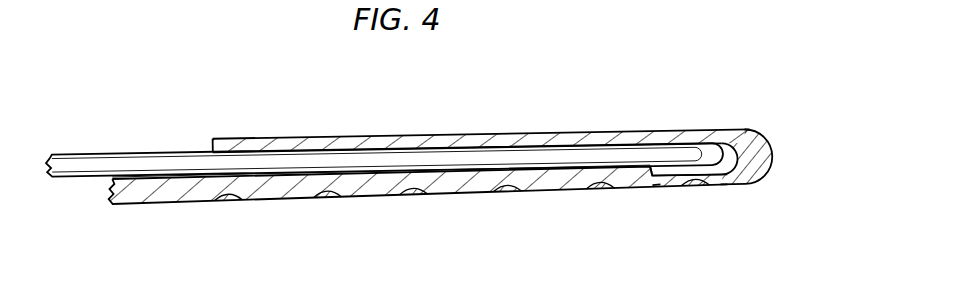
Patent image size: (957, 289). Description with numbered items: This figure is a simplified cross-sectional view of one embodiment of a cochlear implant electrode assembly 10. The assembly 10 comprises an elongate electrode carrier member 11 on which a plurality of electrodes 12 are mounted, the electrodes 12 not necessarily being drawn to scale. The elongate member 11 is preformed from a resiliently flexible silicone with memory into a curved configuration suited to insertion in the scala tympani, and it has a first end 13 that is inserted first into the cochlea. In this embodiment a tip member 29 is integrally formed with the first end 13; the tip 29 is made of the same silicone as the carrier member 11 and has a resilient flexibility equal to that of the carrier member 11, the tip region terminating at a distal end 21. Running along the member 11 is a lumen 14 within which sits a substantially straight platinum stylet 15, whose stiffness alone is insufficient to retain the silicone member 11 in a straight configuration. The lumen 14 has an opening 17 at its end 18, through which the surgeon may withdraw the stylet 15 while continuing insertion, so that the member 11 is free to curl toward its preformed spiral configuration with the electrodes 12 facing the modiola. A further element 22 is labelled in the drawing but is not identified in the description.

The cochlear implant electrode assembly 10 is at (548, 63).
The elongate electrode carrier member 11 is at (497, 200).
The electrodes 12 is at (237, 201).
The first end 13 is at (651, 189).
The lumen 14 is at (380, 170).
The platinum stylet 15 is at (105, 158).
The opening 17 is at (212, 151).
The end 18 is at (220, 138).
The distal end 21 is at (768, 143).
The cavity 22 is at (722, 160).
The tip member 29 is at (765, 117).